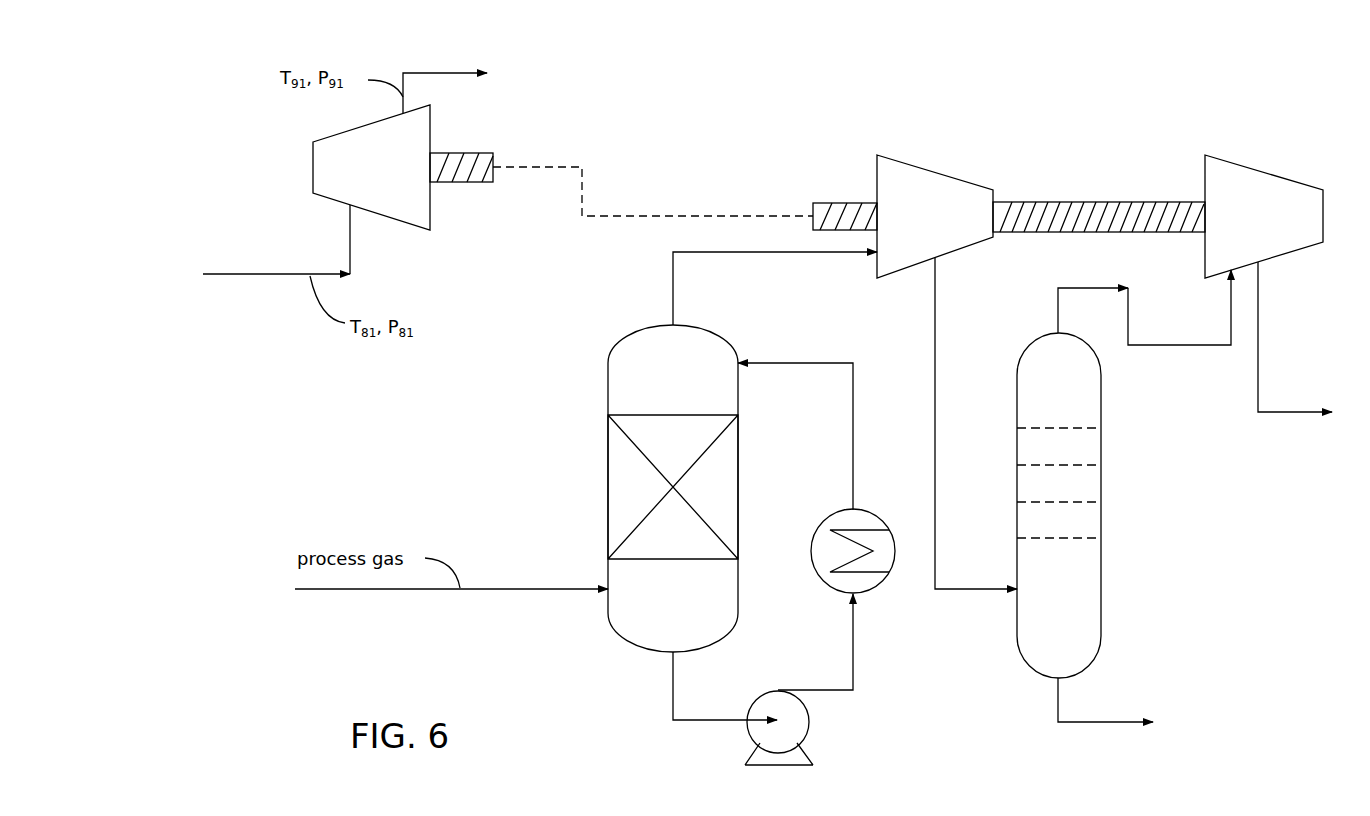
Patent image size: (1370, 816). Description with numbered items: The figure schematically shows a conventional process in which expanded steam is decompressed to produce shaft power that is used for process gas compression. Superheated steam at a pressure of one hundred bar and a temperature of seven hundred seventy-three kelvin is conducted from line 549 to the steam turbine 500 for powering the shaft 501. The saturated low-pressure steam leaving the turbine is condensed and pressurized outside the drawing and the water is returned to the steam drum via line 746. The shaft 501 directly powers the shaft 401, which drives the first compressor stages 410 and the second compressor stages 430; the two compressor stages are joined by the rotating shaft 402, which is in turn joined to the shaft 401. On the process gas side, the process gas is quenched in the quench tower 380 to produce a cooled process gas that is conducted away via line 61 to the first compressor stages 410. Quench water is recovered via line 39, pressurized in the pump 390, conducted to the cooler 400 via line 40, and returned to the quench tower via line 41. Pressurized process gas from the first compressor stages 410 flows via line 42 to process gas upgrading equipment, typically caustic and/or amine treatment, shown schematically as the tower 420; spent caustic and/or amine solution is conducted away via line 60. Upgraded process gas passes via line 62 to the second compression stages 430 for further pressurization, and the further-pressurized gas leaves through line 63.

The line 39 is at (670, 683).
The line 40 is at (843, 693).
The line 41 is at (805, 363).
The line 42 is at (937, 292).
The line 60 is at (1100, 724).
The line 61 is at (673, 275).
The line 62 is at (1080, 288).
The turbine outlet line 63 is at (1280, 413).
The quench tower 380 is at (630, 337).
The pump 390 is at (790, 765).
The cooler 400 is at (870, 592).
The shaft 401 is at (815, 203).
The rotating shaft 402 is at (1070, 200).
The first compressor stages 410 is at (915, 160).
The tower 420 is at (1100, 655).
The second compressor stages 430 is at (1240, 162).
The steam turbine 500 is at (410, 228).
The shaft 501 is at (473, 152).
The line 549 is at (247, 276).
The line 746 is at (450, 70).